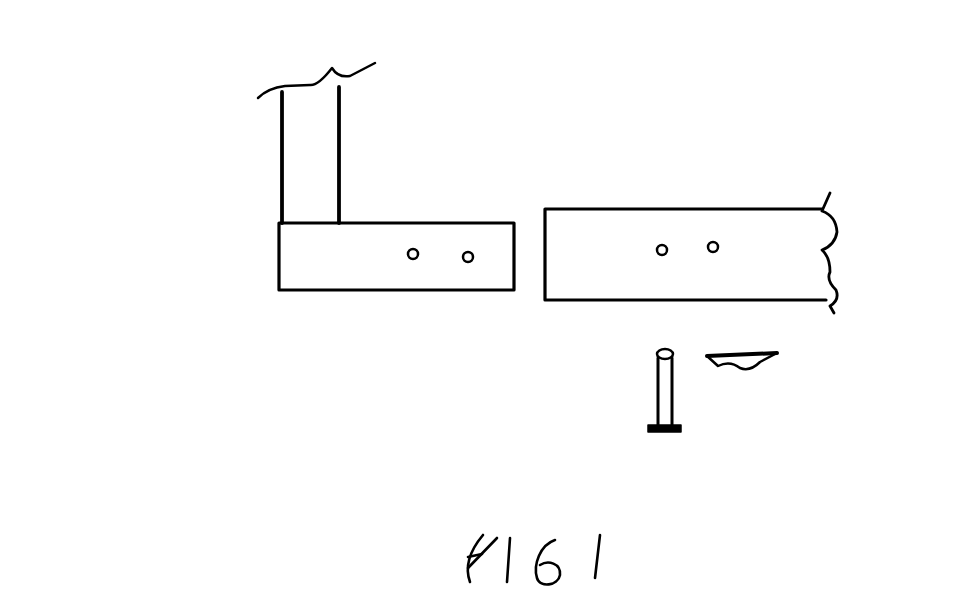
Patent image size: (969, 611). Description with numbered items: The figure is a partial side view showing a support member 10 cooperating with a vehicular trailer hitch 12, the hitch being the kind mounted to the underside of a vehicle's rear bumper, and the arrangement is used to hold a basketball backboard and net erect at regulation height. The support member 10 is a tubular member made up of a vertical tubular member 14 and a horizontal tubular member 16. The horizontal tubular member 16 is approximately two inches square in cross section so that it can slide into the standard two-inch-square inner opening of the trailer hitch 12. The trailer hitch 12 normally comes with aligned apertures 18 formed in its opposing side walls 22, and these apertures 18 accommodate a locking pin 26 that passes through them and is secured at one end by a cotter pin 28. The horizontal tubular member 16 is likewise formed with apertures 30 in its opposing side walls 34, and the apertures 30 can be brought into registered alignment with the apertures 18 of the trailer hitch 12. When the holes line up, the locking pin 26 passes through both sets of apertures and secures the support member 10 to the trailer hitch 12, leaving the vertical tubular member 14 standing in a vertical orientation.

The support member 10 is at (28, 250).
The trailer hitch 12 is at (713, 198).
The vertical tubular member 14 is at (300, 123).
The horizontal tubular member 16 is at (426, 232).
The apertures 18 is at (661, 242).
The side walls 22 is at (790, 265).
The locking pin 26 is at (652, 400).
The cotter pin 28 is at (740, 375).
The apertures 30 is at (466, 262).
The side walls 34 is at (335, 258).